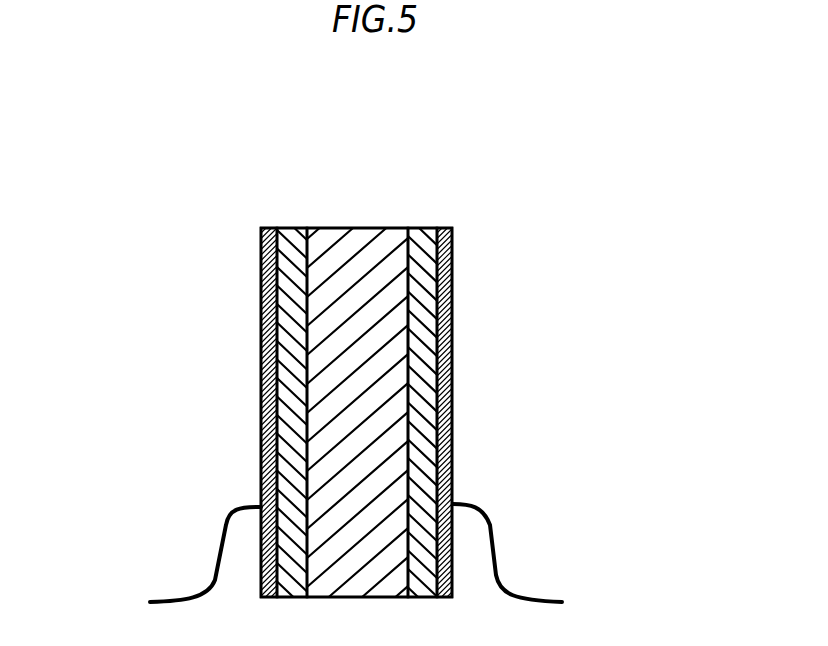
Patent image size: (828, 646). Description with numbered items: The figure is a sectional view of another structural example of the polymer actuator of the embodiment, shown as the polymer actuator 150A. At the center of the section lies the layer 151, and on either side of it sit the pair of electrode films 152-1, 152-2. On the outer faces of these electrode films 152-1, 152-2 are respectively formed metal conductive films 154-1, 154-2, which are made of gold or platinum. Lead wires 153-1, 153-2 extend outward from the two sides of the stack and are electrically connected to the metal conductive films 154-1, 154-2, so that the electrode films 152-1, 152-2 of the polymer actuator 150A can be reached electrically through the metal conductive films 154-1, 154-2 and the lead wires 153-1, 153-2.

The polymer actuator 150A is at (506, 152).
The dielectric core layer 151 is at (349, 254).
The electrode film 152-1 is at (260, 360).
The electrode film 152-2 is at (453, 360).
The lead wire 153-1 is at (218, 562).
The lead wire 153-2 is at (495, 558).
The metal conductive film 154-1 is at (260, 268).
The metal conductive film 154-2 is at (453, 267).